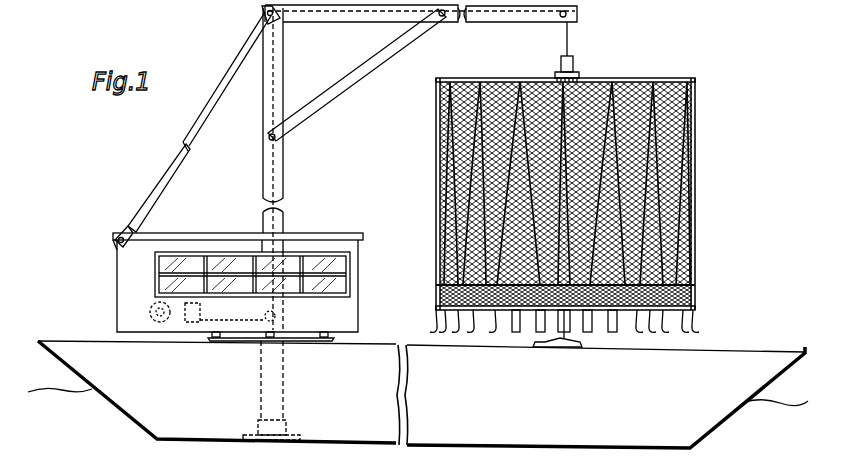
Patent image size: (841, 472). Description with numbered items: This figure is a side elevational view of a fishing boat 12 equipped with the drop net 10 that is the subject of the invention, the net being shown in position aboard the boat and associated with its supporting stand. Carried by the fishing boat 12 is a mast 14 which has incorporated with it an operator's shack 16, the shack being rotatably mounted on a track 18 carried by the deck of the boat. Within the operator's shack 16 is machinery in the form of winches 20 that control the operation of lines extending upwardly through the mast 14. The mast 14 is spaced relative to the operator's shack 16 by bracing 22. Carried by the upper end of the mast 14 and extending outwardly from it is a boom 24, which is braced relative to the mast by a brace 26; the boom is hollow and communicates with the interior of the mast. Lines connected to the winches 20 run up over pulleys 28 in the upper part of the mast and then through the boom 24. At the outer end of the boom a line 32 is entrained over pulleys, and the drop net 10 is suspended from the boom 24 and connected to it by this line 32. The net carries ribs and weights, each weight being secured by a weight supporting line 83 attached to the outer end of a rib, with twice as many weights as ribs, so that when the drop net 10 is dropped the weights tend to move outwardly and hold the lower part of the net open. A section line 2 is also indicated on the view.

The section line of FIG. 2 is at (556, 47).
The drop net 10 is at (643, 73).
The fishing boat 12 is at (593, 432).
The mast 14 is at (285, 180).
The operator's shack 16 is at (321, 237).
The track 18 is at (315, 343).
The winches 20 is at (170, 326).
The bracing 22 is at (171, 164).
The boom 24 is at (337, 21).
The brace 26 is at (366, 78).
The pulleys 28 is at (286, 26).
The line 32 is at (570, 31).
The weight supporting line 83 is at (514, 78).